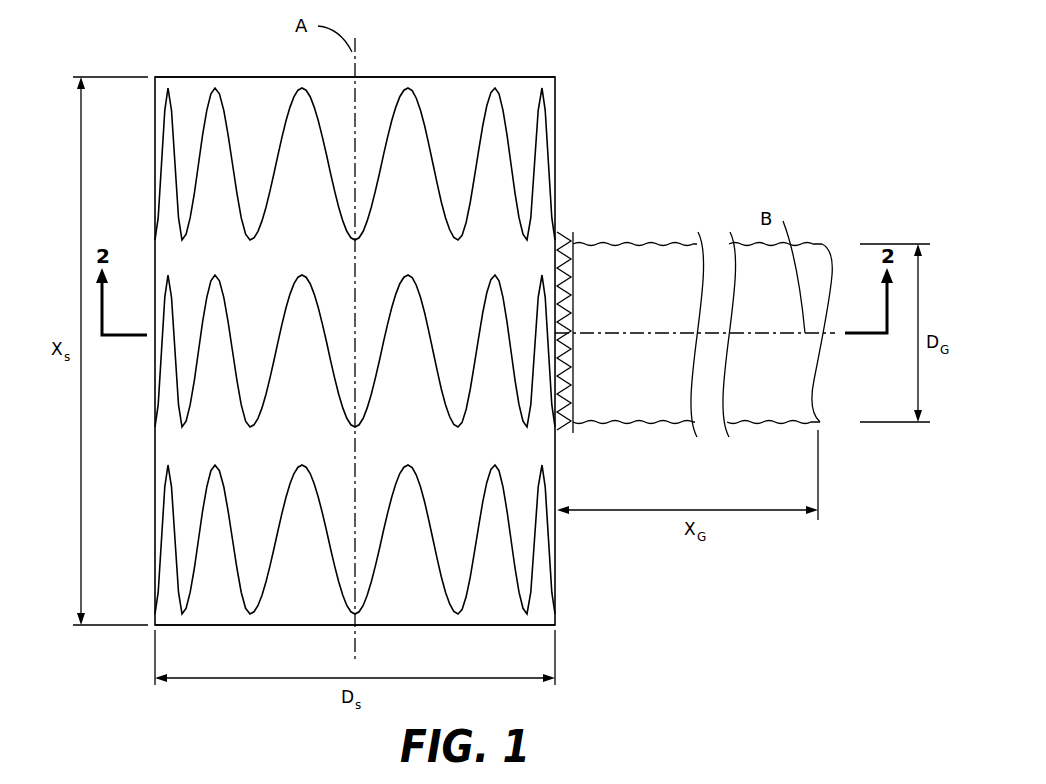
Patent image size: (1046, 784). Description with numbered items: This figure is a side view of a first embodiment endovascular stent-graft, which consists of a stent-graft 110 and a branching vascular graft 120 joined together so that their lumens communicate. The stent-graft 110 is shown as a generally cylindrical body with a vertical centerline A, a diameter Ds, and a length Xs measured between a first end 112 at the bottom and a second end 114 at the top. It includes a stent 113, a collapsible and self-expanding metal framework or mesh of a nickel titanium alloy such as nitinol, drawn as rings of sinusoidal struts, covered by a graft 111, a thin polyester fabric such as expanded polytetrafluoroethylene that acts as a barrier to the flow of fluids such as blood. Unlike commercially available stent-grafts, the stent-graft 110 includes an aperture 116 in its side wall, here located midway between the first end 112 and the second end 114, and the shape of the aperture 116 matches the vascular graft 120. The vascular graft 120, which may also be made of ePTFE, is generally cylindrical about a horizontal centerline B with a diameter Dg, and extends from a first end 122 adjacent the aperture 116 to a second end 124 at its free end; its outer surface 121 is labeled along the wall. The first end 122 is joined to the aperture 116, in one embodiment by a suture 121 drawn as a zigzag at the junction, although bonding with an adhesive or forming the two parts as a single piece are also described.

The stent-graft 110 is at (373, 349).
The graft 111 is at (355, 328).
The first end 112 is at (315, 630).
The stent 113 is at (387, 165).
The second end 114 is at (518, 76).
The aperture 116 is at (573, 240).
The branching vascular graft 120 is at (728, 318).
The outer surface 121 is at (652, 325).
The first end 122 is at (568, 392).
The second end 124 is at (815, 353).